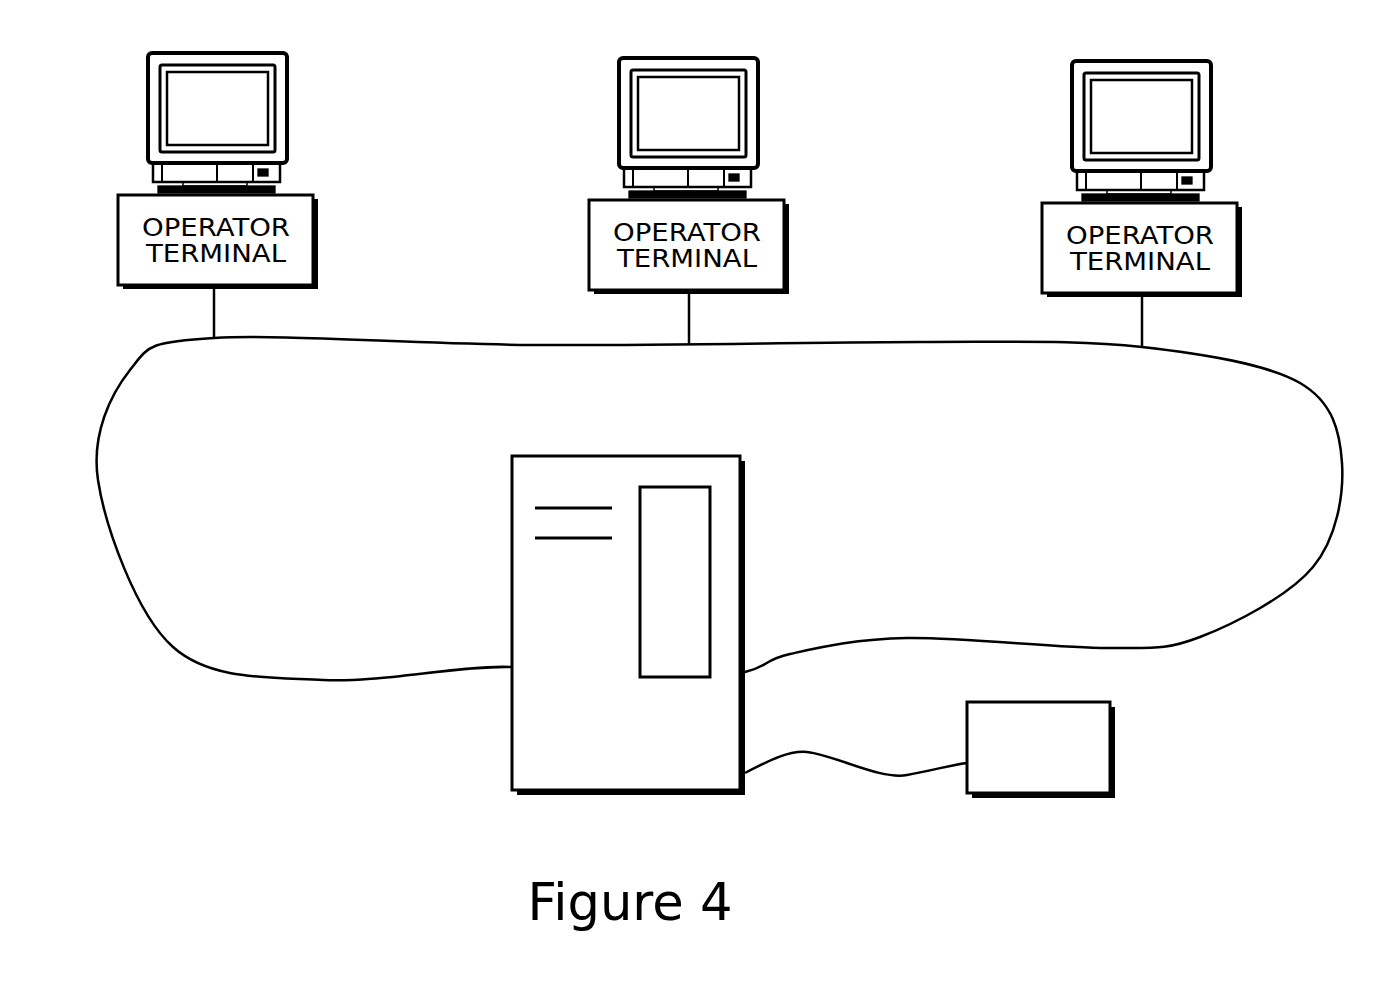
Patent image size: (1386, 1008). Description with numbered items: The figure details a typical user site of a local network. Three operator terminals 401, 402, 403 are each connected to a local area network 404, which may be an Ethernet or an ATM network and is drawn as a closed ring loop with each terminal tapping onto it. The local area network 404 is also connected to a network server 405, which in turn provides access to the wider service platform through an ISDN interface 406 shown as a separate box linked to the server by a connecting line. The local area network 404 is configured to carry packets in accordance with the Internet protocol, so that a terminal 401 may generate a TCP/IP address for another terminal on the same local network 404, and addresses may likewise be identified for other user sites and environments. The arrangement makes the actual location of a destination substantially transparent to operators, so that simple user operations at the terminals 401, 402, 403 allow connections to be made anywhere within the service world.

The terminal 401 is at (307, 222).
The terminal 402 is at (778, 225).
The terminal 403 is at (1232, 230).
The local area network 404 is at (100, 520).
The network server 405 is at (525, 722).
The ISDN 2 interface 406 is at (1100, 733).